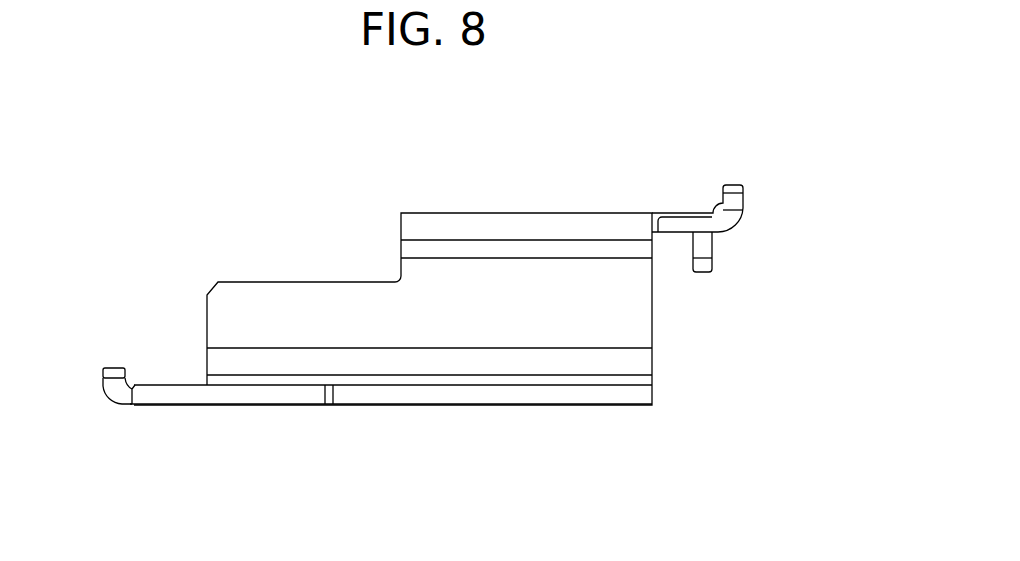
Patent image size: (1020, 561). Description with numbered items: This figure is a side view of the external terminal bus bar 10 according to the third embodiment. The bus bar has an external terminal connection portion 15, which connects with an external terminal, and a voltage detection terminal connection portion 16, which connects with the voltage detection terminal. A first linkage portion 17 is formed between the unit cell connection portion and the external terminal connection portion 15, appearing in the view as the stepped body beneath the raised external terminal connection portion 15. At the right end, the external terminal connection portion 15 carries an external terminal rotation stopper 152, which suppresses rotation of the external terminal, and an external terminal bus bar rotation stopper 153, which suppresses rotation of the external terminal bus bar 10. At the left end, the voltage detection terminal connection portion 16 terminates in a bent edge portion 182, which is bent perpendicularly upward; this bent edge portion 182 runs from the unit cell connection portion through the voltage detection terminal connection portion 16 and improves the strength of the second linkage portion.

The external terminal bus bar 10 is at (208, 209).
The external terminal connection portion 15 is at (511, 213).
The voltage detection terminal connection portion 16 is at (245, 392).
The first linkage portion 17 is at (563, 330).
The external terminal rotation stopper 152 is at (735, 185).
The external terminal bus bar rotation stopper 153 is at (702, 265).
The bent edge portion 182 is at (108, 368).